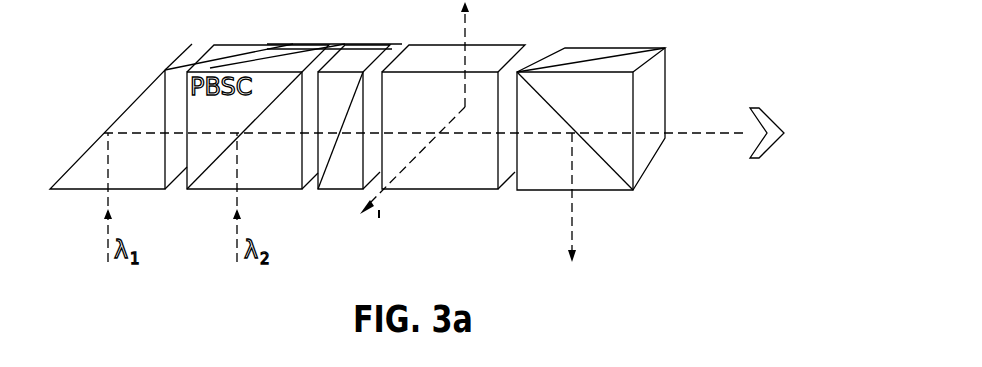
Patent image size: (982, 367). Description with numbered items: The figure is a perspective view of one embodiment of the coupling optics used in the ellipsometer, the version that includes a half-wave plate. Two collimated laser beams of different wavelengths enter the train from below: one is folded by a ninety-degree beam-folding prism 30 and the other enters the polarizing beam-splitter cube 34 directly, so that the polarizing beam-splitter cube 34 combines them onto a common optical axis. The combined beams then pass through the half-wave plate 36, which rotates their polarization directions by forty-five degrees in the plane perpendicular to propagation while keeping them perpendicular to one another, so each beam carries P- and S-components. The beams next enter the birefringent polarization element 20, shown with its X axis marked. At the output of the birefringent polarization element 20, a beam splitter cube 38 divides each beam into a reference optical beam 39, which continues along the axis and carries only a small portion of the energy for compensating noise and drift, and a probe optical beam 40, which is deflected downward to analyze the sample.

The beam-folding prism 30 is at (165, 70).
The polarizing beam-splitter cube 34 is at (347, 43).
The half-wave plate 36 is at (350, 189).
The birefringent polarization element 20 is at (487, 190).
The beam splitter cube 38 is at (584, 190).
The reference optical beam 39 is at (697, 134).
The probe optical beam 40 is at (570, 235).